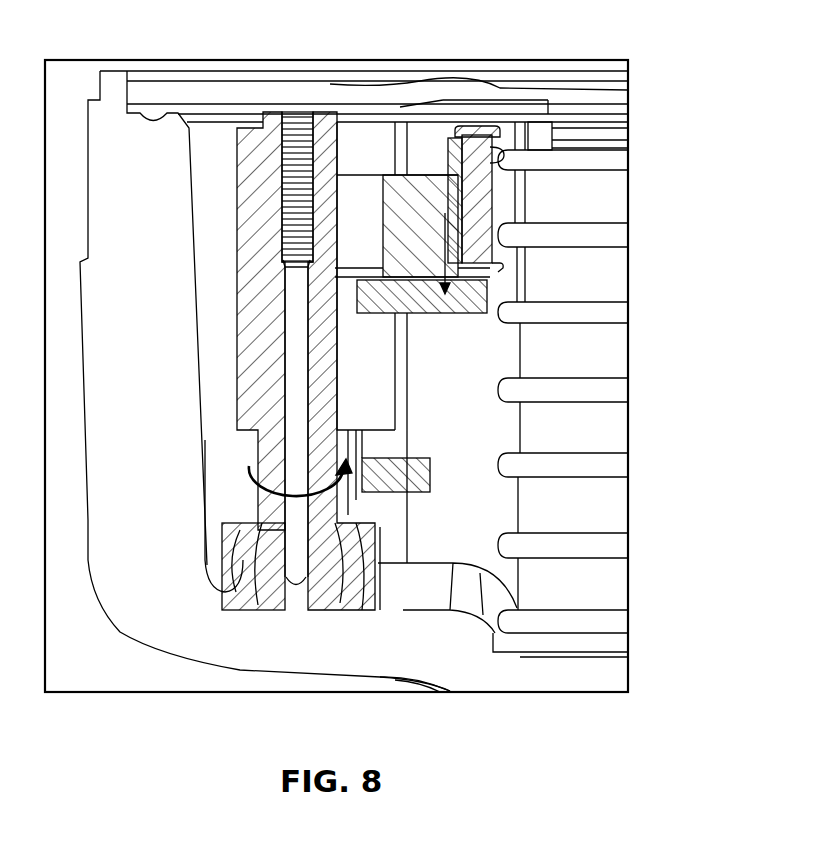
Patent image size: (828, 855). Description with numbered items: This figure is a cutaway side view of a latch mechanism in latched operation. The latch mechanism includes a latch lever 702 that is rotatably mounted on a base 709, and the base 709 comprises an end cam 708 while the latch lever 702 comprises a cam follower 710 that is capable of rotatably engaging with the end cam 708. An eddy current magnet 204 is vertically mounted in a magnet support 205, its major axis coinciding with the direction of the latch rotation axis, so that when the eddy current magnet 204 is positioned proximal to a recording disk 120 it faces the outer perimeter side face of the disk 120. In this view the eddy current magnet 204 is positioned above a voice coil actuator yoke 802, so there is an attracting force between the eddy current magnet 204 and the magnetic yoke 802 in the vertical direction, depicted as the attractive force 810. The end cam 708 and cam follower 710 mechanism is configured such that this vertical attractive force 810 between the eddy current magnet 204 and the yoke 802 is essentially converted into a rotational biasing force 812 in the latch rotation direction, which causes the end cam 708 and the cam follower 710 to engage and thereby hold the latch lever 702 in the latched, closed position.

The disk 120 is at (640, 150).
The eddy current magnet 204 is at (470, 123).
The magnet support 205 is at (503, 115).
The latch lever 702 is at (237, 255).
The end cam 708 is at (257, 493).
The base 709 is at (210, 563).
The cam follower 710 is at (257, 450).
The voice coil actuator yoke 802 is at (427, 315).
The attractive force 810 is at (493, 220).
The rotational biasing force 812 is at (362, 505).